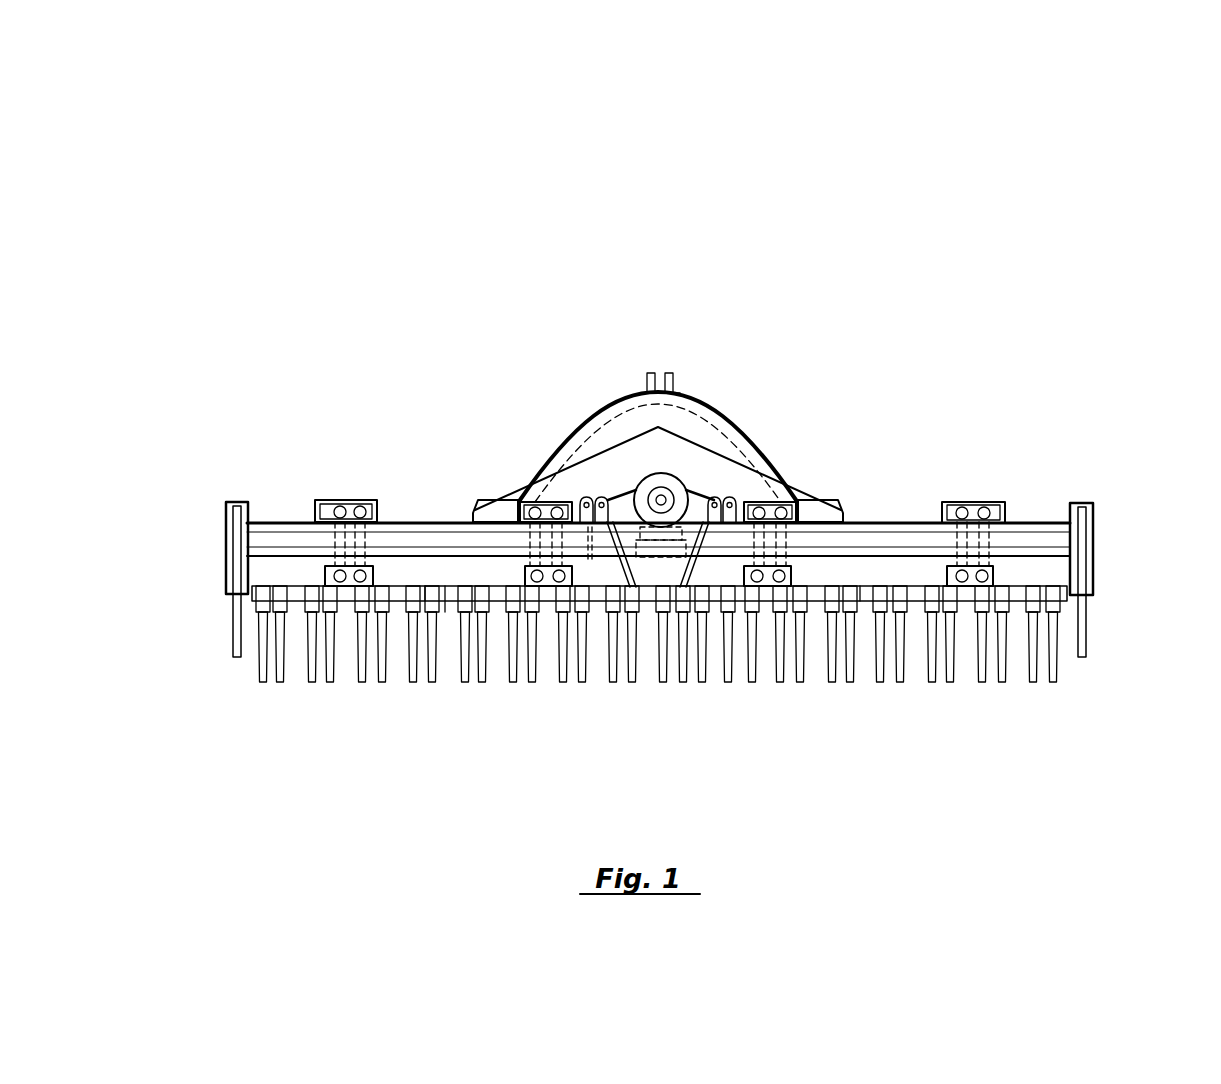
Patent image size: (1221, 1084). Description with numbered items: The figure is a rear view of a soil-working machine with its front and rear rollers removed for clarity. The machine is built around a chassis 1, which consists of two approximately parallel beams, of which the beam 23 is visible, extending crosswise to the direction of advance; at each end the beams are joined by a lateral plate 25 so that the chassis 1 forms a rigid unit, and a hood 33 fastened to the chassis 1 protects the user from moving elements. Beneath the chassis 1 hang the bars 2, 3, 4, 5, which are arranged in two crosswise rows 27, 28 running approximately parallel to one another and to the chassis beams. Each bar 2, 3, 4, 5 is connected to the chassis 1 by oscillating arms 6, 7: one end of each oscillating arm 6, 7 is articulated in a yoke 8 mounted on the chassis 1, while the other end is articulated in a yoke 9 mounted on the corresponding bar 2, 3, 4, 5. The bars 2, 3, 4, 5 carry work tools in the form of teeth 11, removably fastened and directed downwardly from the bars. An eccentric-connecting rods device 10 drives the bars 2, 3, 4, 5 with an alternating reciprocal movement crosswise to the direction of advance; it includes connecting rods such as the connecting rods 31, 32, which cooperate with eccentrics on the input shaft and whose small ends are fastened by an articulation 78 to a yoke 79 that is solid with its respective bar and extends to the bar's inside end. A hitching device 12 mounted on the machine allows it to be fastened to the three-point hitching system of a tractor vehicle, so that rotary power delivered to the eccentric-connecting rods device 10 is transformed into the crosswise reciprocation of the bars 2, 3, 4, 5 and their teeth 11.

The chassis 1 is at (1043, 540).
The bar 2 is at (445, 605).
The bar 3 is at (852, 548).
The bar 4 is at (438, 588).
The bar 5 is at (854, 552).
The oscillating arm 6 is at (327, 500).
The oscillating arm 7 is at (362, 502).
The yoke 8 is at (347, 503).
The yoke 9 is at (357, 682).
The eccentric-connecting rods device 10 is at (661, 468).
The teeth 11 is at (332, 682).
The hitching device 12 is at (690, 445).
The beam 23 is at (282, 520).
The lateral plate 25 is at (235, 540).
The row 27 is at (313, 613).
The row 28 is at (278, 585).
The connecting rod 31 is at (593, 575).
The connecting rod 32 is at (728, 568).
The hood 33 is at (1022, 523).
The articulation 78 is at (545, 450).
The yoke 79 is at (668, 478).